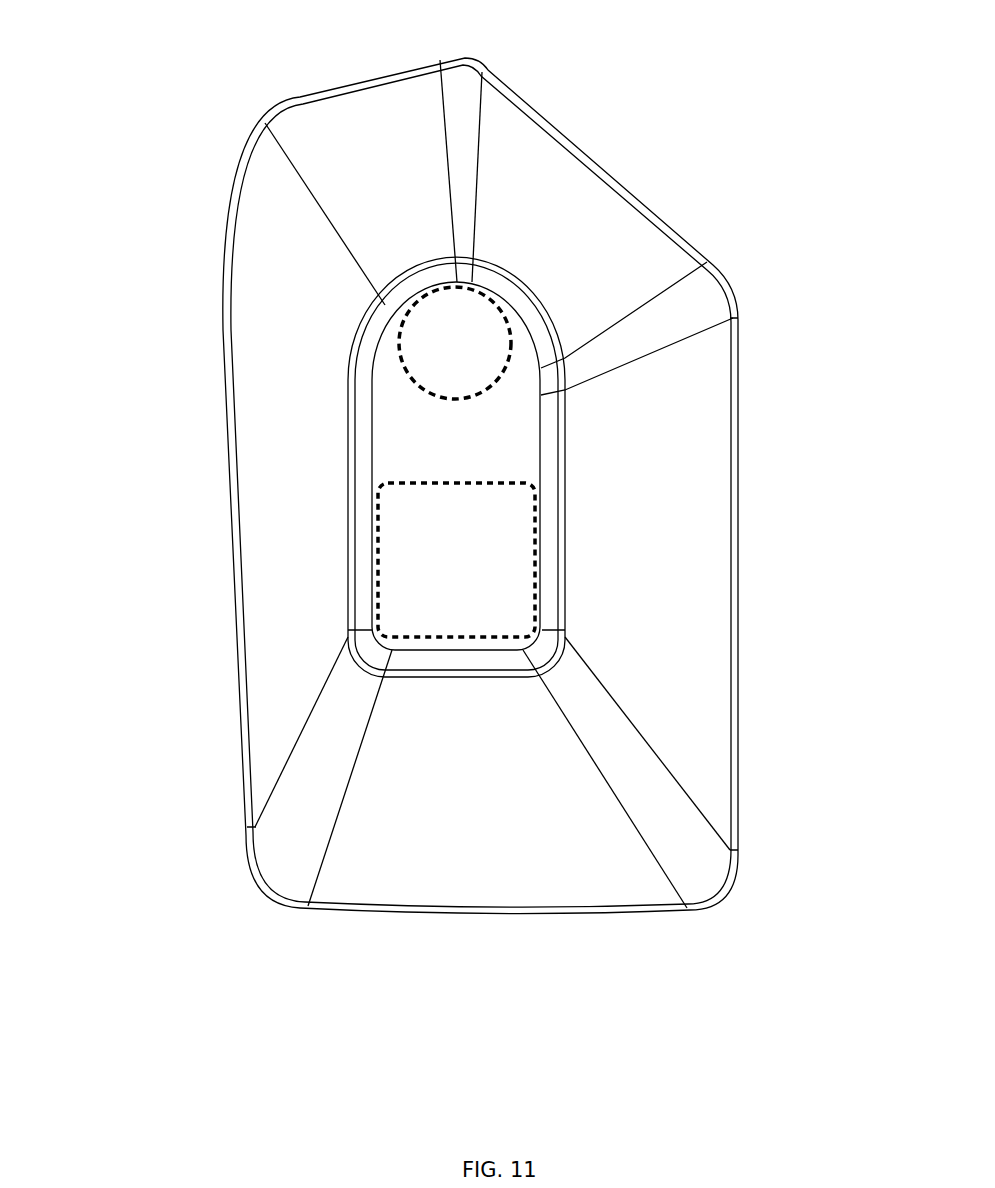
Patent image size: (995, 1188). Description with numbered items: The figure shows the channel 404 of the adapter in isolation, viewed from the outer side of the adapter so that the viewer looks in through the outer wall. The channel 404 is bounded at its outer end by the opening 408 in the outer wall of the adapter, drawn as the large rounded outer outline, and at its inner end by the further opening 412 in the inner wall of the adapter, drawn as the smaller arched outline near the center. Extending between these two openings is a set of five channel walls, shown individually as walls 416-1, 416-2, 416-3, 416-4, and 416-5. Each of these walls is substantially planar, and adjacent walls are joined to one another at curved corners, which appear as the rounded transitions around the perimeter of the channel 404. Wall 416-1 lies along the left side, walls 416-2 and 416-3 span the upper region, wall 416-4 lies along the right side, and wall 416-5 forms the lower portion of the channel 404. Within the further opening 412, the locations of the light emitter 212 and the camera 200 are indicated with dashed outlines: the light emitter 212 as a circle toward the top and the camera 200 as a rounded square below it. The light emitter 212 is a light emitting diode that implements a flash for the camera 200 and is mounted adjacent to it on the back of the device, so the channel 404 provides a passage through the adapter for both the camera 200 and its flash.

The channel 404 is at (198, 916).
The opening 408 is at (233, 512).
The further opening 412 is at (456, 467).
The channel wall 416-1 is at (248, 360).
The channel wall 416-2 is at (325, 122).
The channel wall 416-3 is at (557, 187).
The channel wall 416-4 is at (700, 492).
The channel wall 416-5 is at (478, 872).
The camera 200 is at (456, 560).
The light emitter 212 is at (455, 343).